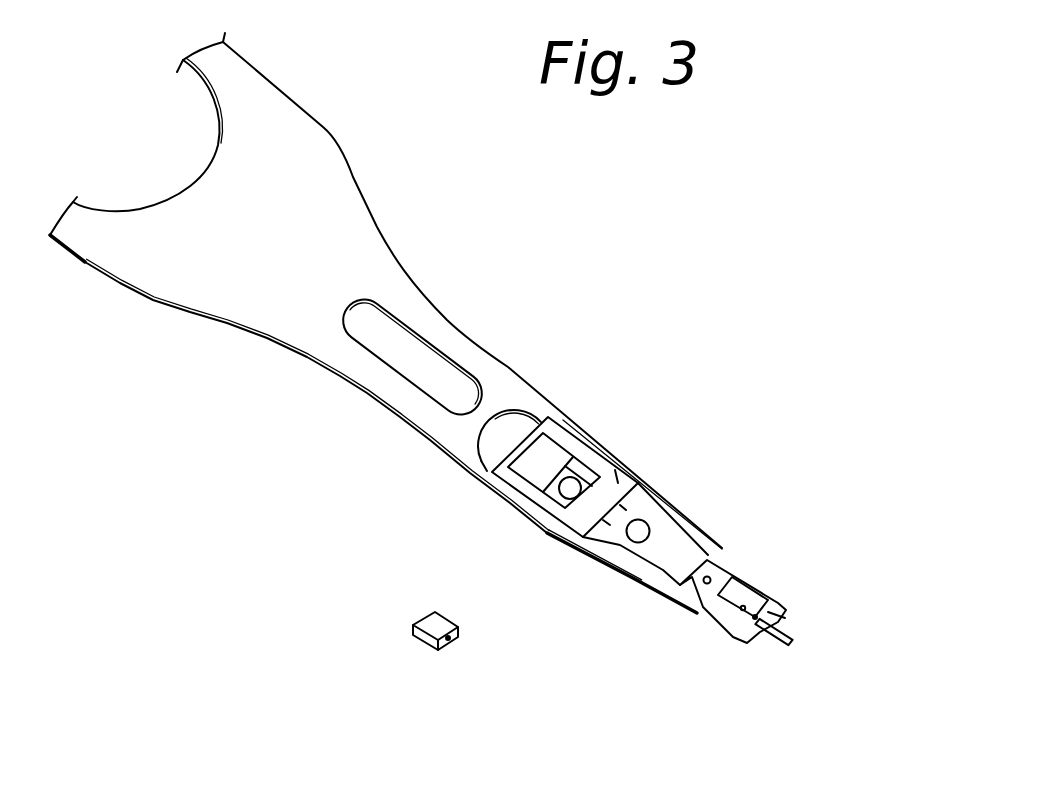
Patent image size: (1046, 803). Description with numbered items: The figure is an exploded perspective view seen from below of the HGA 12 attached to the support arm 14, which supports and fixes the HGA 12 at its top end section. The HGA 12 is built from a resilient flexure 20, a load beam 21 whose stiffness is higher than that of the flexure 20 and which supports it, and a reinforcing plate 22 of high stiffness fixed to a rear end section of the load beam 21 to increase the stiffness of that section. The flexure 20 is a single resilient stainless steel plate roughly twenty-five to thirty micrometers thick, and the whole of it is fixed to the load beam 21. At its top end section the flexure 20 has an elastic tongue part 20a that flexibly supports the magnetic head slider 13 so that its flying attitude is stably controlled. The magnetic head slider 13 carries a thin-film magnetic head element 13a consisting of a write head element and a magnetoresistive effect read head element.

The HGA 12 is at (741, 505).
The magnetic head slider 13 is at (428, 632).
The thin-film magnetic head element 13a is at (448, 638).
The support arm 14 is at (343, 224).
The flexure 20 is at (658, 531).
The elastic tongue part 20a is at (747, 590).
The load beam 21 is at (620, 556).
The reinforcing plate 22 is at (617, 483).